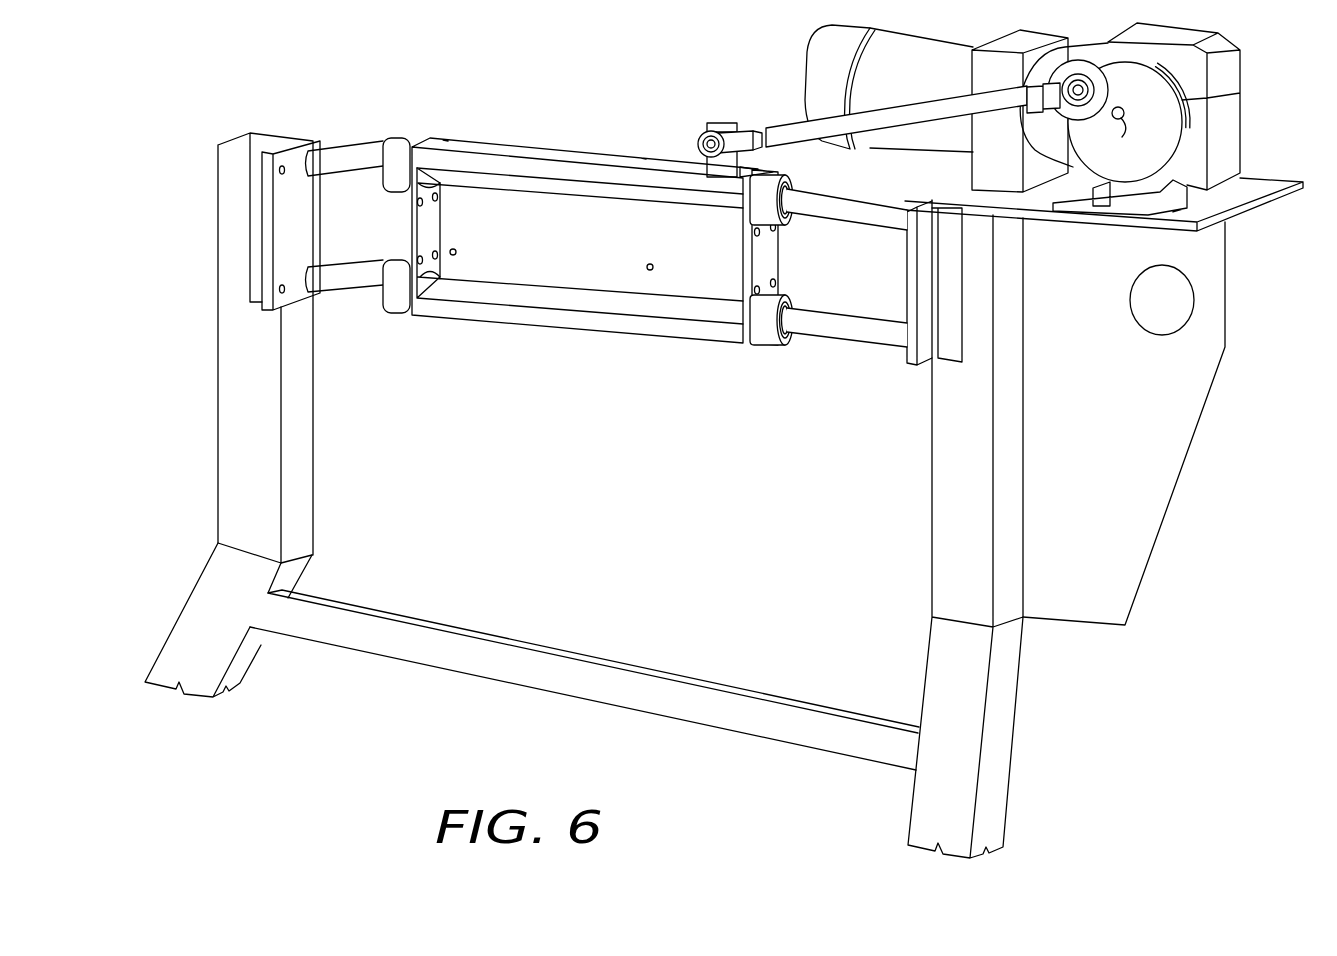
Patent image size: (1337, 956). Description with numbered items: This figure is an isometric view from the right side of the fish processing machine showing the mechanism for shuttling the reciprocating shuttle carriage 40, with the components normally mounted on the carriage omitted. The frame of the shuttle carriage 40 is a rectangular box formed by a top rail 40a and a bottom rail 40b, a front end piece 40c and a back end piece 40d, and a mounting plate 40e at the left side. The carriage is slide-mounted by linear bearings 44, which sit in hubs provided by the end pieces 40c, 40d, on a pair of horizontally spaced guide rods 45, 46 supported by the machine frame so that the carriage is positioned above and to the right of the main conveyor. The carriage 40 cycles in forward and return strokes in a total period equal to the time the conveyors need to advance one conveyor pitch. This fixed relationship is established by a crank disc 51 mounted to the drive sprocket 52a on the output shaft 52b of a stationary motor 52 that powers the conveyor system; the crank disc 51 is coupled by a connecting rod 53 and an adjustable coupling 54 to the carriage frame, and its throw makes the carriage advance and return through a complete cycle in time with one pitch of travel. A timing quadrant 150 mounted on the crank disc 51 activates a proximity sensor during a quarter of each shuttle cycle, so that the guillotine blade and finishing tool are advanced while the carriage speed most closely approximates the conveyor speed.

The shuttle carriage 40 is at (545, 131).
The top rail 40a is at (617, 141).
The bottom rail 40b is at (560, 327).
The front end piece 40c is at (768, 254).
The back end piece 40d is at (403, 225).
The mounting plate 40e is at (552, 258).
The linear bearing 44 is at (797, 181).
The guide rod 45 is at (853, 212).
The guide rod 46 is at (875, 292).
The crank disc 51 is at (1147, 155).
The stationary motor 52 is at (913, 138).
The drive sprocket 52a is at (1218, 94).
The output shaft 52b is at (1122, 138).
The connecting rod 53 is at (915, 90).
The adjustable coupling 54 is at (770, 105).
The timing quadrant 150 is at (1158, 67).